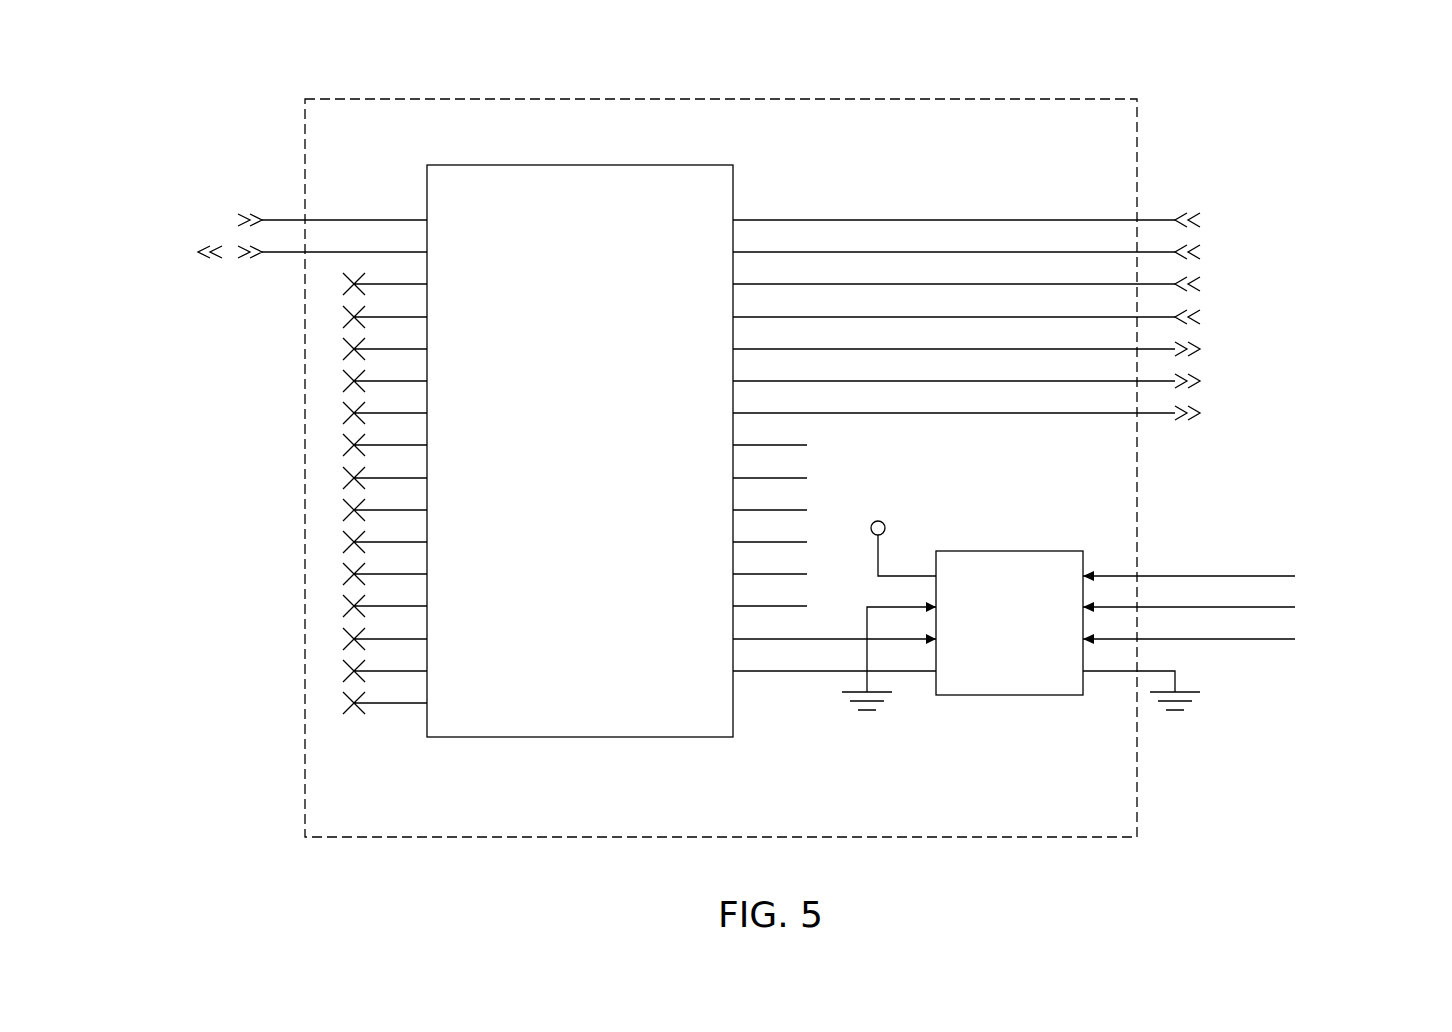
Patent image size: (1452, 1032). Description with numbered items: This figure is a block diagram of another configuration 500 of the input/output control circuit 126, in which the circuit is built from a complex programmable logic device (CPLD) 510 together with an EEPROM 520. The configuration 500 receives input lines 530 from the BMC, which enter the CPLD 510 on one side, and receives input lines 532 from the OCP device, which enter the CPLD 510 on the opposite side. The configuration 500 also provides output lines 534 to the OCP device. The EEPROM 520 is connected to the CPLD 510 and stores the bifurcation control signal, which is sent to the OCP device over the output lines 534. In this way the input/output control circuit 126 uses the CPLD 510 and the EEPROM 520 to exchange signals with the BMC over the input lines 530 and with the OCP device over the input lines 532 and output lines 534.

The configuration 500 is at (230, 75).
The input/output control circuit 126 is at (981, 99).
The complex programmable logic device (CPLD) 510 is at (580, 737).
The EEPROM 520 is at (1012, 551).
The input lines 530 is at (327, 253).
The input lines 532 is at (1152, 220).
The output lines 534 is at (1155, 413).